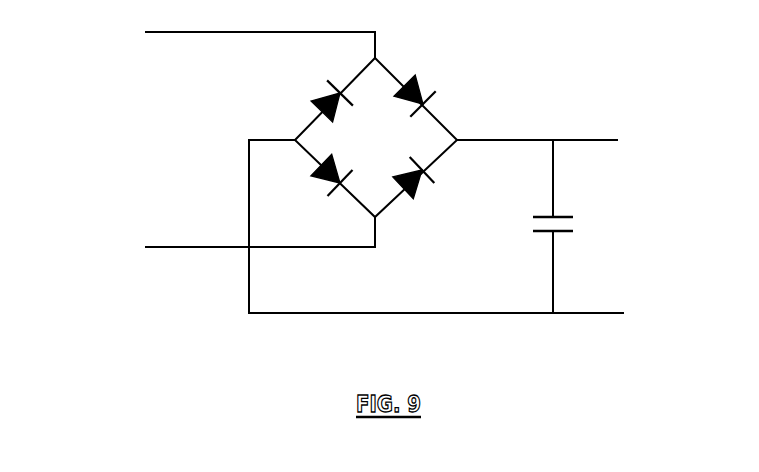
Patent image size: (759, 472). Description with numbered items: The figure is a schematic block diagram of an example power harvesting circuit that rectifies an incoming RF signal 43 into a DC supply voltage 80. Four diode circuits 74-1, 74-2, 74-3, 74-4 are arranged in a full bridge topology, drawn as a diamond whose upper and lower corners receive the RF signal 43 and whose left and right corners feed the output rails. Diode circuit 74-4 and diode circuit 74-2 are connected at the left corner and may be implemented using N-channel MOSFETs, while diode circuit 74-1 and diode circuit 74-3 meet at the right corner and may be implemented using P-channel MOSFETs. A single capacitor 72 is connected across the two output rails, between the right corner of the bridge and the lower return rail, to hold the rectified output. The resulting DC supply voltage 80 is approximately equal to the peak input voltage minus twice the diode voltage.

The RF signal 43 is at (197, 154).
The capacitor 72 is at (544, 267).
The diode circuit 74-1 is at (488, 99).
The diode circuit 74-2 is at (315, 212).
The diode circuit 74-3 is at (470, 220).
The diode circuit 74-4 is at (305, 94).
The DC supply voltage 80 is at (739, 247).